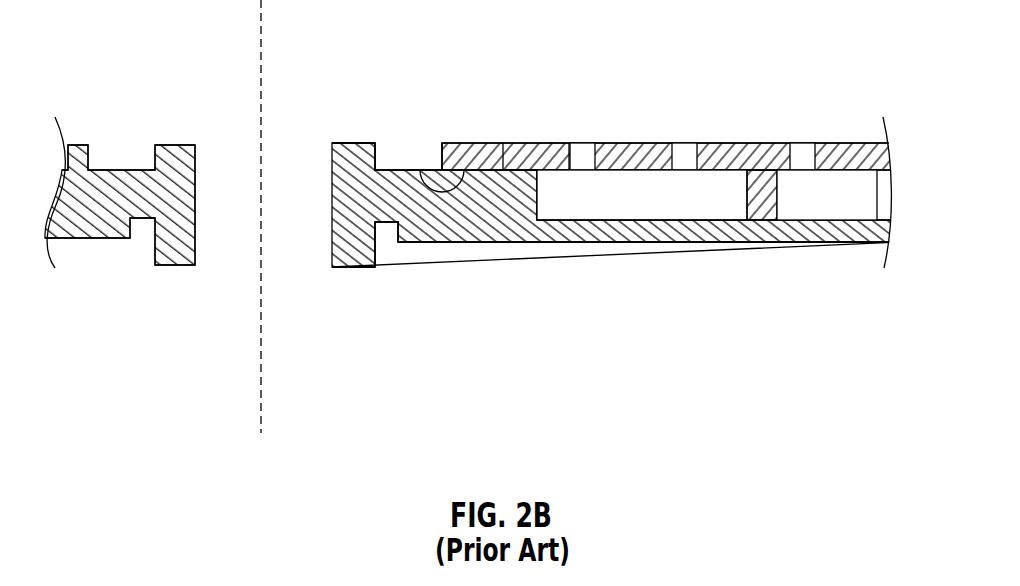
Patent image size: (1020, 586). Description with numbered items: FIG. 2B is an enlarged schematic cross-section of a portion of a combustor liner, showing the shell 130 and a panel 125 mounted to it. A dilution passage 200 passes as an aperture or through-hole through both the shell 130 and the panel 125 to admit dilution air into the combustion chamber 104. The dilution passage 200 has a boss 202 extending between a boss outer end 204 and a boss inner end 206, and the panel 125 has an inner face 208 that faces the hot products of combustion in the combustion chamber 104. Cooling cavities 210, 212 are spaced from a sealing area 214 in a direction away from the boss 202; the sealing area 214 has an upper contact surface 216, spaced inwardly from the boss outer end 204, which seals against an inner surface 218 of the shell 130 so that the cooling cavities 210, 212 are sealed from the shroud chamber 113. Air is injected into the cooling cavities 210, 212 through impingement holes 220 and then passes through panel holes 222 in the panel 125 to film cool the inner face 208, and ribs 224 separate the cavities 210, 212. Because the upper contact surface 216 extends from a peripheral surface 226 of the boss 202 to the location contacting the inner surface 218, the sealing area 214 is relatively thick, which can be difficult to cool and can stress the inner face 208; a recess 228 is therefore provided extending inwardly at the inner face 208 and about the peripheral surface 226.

The shroud chamber 113 is at (255, 19).
The combustion chamber 104 is at (257, 399).
The dilution passage 200 is at (255, 234).
The boss 202 is at (345, 172).
The boss outer end 204 is at (334, 143).
The boss inner end 206 is at (342, 262).
The inner face 208 is at (408, 246).
The cooling cavity 210 is at (669, 208).
The cooling cavity 212 is at (860, 200).
The sealing area 214 is at (492, 178).
The upper contact surface 216 is at (503, 160).
The inner surface 218 is at (420, 168).
The impingement holes 220 is at (585, 155).
The panel holes 222 is at (598, 232).
The ribs 224 is at (763, 187).
The peripheral surface 226 is at (385, 165).
The recess 228 is at (386, 225).
The shell 130 is at (535, 147).
The panel 125 is at (510, 220).